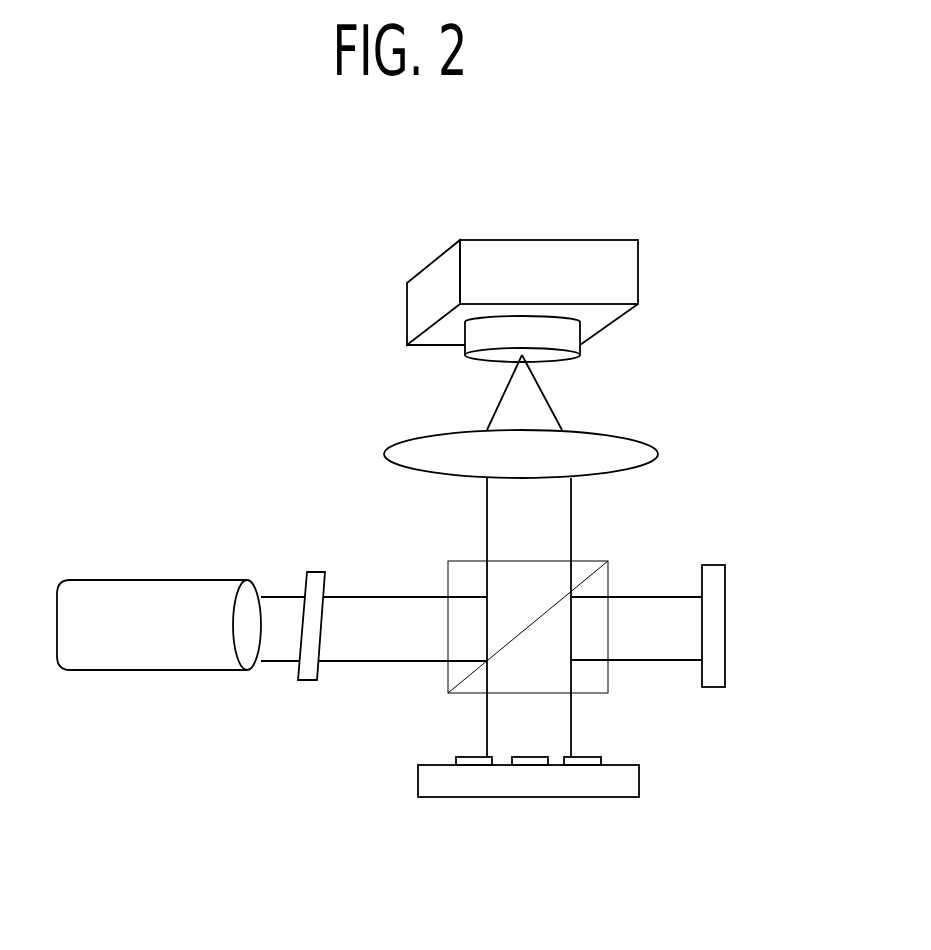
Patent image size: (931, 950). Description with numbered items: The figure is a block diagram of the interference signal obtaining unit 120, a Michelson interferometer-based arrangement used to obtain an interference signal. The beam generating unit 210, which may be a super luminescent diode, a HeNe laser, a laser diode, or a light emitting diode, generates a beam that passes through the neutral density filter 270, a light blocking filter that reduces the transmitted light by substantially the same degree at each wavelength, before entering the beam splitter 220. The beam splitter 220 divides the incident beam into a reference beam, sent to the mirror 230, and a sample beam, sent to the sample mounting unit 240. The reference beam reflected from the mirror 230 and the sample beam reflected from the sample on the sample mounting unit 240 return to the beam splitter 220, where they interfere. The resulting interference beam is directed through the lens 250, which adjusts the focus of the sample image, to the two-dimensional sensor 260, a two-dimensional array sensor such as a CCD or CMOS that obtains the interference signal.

The interference signal obtaining unit 120 is at (720, 178).
The beam generating unit 210 is at (143, 580).
The beam splitter 220 is at (590, 562).
The mirror 230 is at (714, 565).
The sample mounting unit 240 is at (639, 782).
The lens 250 is at (615, 432).
The 2D sensor 260 is at (592, 240).
The neutral density (ND) filter 270 is at (318, 572).